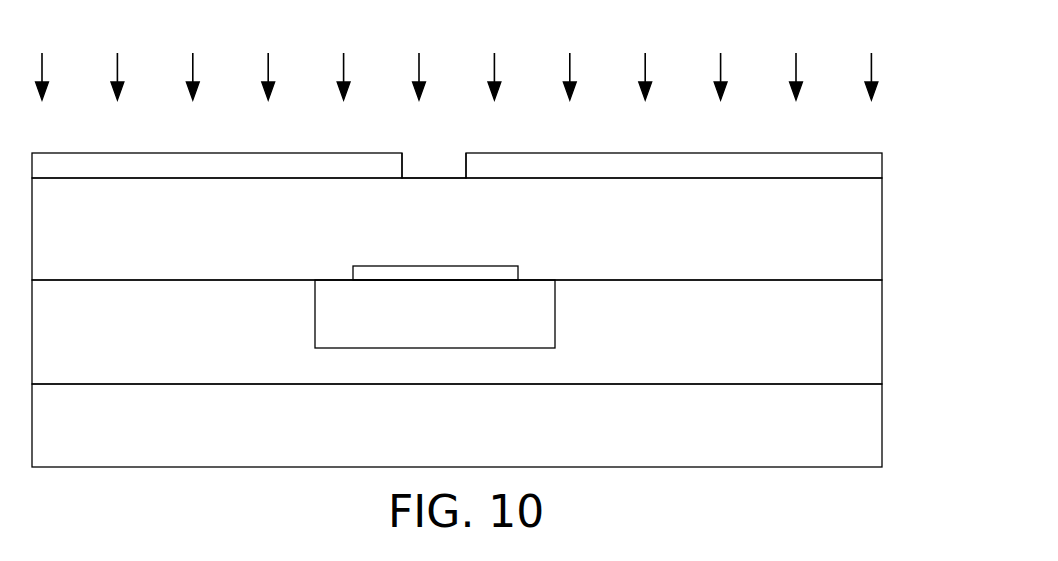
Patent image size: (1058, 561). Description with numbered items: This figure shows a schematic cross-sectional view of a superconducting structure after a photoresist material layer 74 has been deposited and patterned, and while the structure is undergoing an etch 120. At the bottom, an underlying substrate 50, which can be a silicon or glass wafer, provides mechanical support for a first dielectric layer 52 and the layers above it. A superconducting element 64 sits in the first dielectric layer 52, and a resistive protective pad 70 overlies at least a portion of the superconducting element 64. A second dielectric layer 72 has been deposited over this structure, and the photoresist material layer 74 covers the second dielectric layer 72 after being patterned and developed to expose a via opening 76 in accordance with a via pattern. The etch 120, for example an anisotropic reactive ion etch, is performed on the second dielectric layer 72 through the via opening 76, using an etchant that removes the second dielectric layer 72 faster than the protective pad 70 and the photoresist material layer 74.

The etch 120 is at (866, 41).
The underlying substrate 50 is at (883, 402).
The first dielectric layer 52 is at (883, 328).
The superconducting element 64 is at (451, 328).
The resistive protective pad 70 is at (519, 271).
The second dielectric layer 72 is at (883, 227).
The photoresist material layer 74 is at (883, 165).
The via opening 76 is at (447, 169).